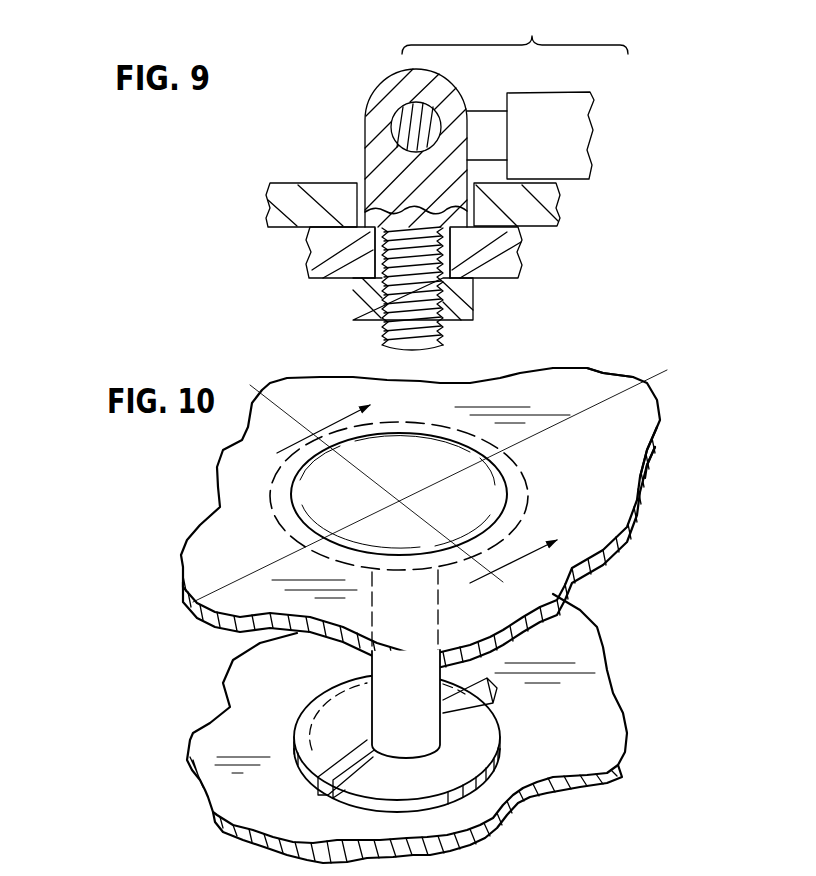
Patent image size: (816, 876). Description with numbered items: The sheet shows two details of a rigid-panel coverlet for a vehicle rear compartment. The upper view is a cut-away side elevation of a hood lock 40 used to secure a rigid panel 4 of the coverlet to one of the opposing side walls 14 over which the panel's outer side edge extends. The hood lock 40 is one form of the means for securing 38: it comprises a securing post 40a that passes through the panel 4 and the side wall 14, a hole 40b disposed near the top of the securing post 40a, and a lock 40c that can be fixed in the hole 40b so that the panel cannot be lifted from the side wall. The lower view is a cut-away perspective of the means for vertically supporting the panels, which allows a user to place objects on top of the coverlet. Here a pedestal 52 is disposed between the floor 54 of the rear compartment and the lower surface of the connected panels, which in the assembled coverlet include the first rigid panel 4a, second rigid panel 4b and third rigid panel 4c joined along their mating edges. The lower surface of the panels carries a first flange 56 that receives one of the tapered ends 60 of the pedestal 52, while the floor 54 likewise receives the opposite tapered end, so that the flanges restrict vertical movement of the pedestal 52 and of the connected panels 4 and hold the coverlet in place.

In FIG. 9, the rigid panel 4 is at (298, 185).
In FIG. 10, the first rigid panel 4a is at (213, 543).
In FIG. 10, the second rigid panel 4b is at (578, 380).
In FIG. 10, the third rigid panel 4c is at (627, 450).
In FIG. 9, the opposing side wall 14 is at (333, 280).
In FIG. 9, the means for securing 38 is at (355, 206).
In FIG. 9, the hood lock 40 is at (515, 31).
In FIG. 9, the securing post 40a is at (365, 143).
In FIG. 9, the hole 40b is at (436, 106).
In FIG. 9, the lock 40c is at (560, 91).
In FIG. 10, the pedestal 52 is at (370, 668).
In FIG. 10, the floor 54 is at (268, 503).
In FIG. 10, the first flange 56 is at (298, 767).
In FIG. 10, the tapered ends 60 is at (483, 773).